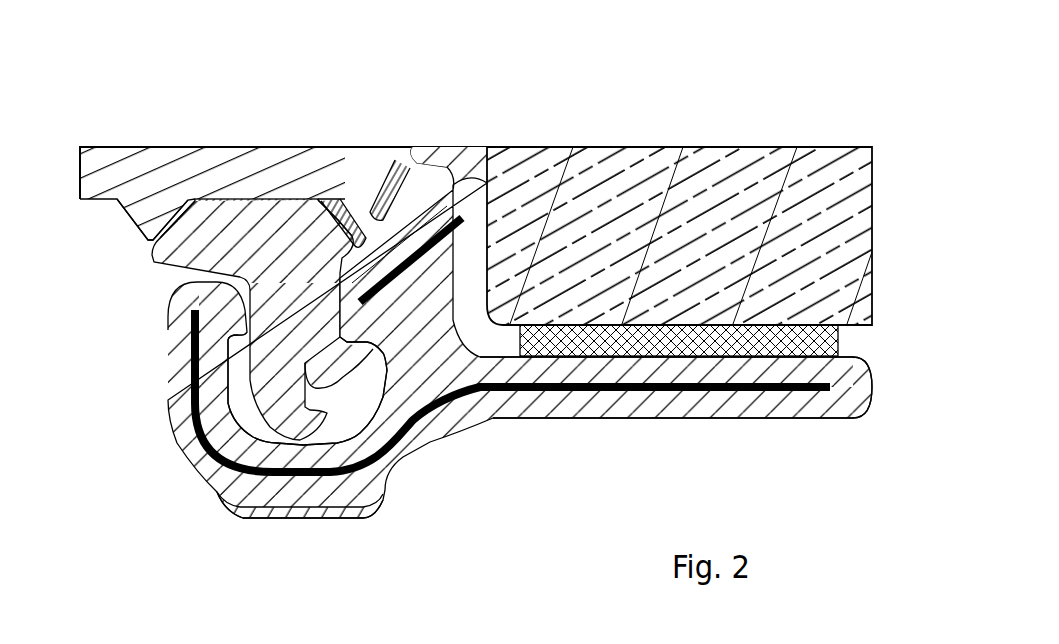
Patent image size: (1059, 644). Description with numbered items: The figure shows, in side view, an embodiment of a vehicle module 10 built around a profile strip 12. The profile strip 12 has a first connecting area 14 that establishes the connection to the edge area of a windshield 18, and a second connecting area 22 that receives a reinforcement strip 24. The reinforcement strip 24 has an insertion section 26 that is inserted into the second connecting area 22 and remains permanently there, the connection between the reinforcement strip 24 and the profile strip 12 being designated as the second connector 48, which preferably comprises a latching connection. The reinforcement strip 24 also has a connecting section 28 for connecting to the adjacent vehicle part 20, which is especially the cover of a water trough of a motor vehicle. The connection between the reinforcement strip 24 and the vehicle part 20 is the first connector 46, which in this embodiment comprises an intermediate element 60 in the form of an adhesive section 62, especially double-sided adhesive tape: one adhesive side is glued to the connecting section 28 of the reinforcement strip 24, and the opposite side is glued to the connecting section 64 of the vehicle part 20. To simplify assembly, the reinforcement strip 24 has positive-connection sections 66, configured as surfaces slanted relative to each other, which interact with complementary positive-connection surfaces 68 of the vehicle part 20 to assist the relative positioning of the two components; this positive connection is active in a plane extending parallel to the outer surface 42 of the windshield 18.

The vehicle module 10 is at (588, 110).
The profile strip 12 is at (450, 462).
The first connecting area 14 is at (804, 439).
The windshield 18 is at (777, 128).
The vehicle part 20 is at (160, 128).
The second connecting area 22 is at (126, 430).
The reinforcement strip 24 is at (161, 285).
The insertion section 26 is at (265, 385).
The connecting section 28 is at (217, 199).
The outer surface 42 is at (685, 146).
The first connector 46 is at (128, 268).
The second connector 48 is at (350, 412).
The intermediate element 60 is at (303, 183).
The adhesive section 62 is at (265, 198).
The connecting section 64 is at (333, 182).
The positive-connection sections 66 is at (165, 230).
The positive-connection surfaces 68 is at (288, 201).